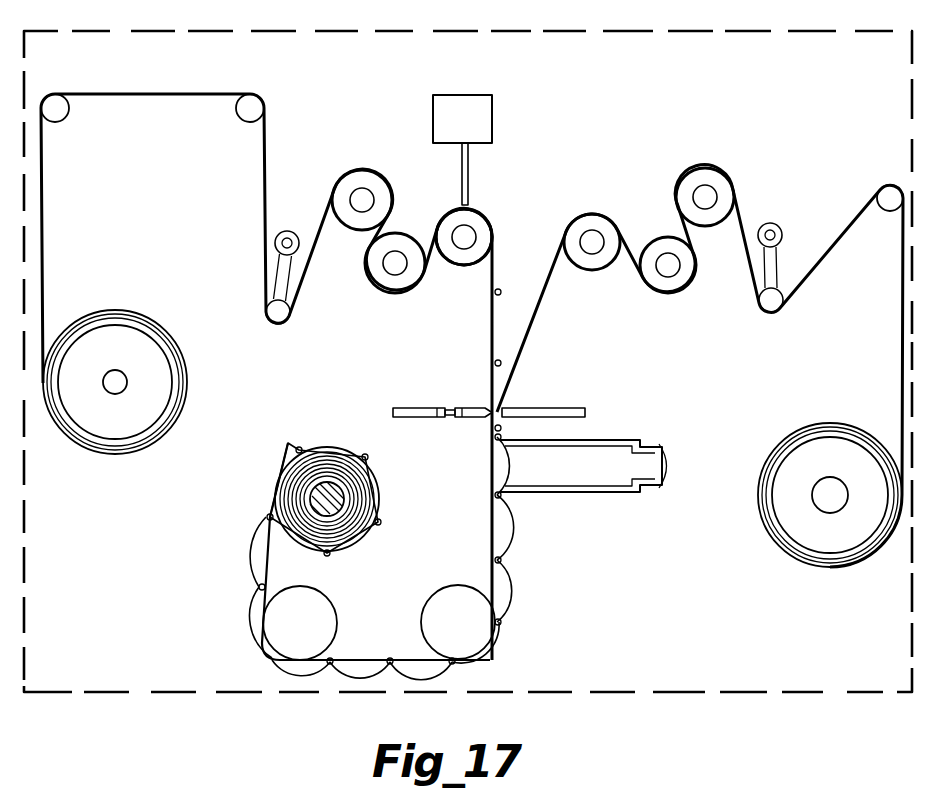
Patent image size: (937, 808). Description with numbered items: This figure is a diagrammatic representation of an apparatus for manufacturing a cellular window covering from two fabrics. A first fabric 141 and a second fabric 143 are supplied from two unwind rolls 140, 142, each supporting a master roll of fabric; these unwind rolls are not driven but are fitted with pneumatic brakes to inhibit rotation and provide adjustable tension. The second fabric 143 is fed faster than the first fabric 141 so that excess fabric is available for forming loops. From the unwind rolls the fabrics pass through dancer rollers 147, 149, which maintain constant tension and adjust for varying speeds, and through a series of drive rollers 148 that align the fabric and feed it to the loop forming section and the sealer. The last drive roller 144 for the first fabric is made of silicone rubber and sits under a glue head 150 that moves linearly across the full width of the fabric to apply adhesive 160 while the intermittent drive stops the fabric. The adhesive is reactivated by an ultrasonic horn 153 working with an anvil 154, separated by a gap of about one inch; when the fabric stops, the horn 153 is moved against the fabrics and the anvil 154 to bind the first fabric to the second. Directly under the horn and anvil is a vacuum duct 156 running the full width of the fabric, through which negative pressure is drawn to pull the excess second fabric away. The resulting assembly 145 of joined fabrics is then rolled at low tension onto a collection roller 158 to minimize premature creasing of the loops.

The unwind roll 140 is at (100, 340).
The first fabric 141 is at (208, 93).
The unwind roll 142 is at (808, 560).
The second fabric 143 is at (903, 365).
The last drive roller 144 is at (452, 258).
The assembly of the first and second fabric 145 is at (520, 590).
The dancer roller 147 is at (276, 312).
The drive rollers 148 is at (374, 270).
The dancer roller 149 is at (772, 312).
The glue head 150 is at (492, 110).
The ultrasonic horn 153 is at (470, 405).
The anvil 154 is at (560, 408).
The vacuum duct 156 is at (560, 475).
The collection roller 158 is at (320, 497).
The adhesive 160 is at (484, 210).